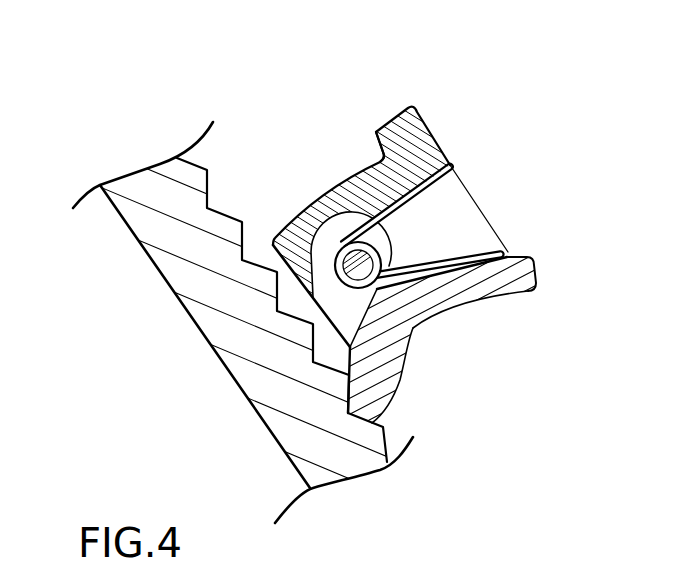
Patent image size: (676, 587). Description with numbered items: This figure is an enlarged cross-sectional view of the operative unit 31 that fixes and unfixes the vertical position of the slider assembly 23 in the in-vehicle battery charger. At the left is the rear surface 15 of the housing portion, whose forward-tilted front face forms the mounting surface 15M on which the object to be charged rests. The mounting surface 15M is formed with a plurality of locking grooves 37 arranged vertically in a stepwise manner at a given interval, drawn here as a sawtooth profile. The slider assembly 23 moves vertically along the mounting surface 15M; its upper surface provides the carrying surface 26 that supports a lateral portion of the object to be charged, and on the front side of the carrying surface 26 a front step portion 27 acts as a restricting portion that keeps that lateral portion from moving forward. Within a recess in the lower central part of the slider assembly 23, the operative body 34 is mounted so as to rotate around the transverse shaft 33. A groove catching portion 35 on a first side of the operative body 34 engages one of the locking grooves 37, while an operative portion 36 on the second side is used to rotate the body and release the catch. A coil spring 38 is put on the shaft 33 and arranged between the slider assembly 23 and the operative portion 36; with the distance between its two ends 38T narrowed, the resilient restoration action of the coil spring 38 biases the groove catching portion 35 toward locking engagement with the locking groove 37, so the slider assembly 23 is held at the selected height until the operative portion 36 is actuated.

The rear surface 15 is at (148, 232).
The mounting surface 15M is at (207, 172).
The slider assembly 23 is at (425, 138).
The carrying surface 26 is at (340, 185).
The front step portion 27 is at (378, 140).
The operative unit 31 is at (550, 290).
The transverse shaft 33 is at (366, 261).
The operative body 34 is at (418, 318).
The groove catching portion 35 is at (378, 397).
The operative portion 36 is at (528, 290).
The locking grooves 37 is at (262, 266).
The coil spring 38 is at (347, 290).
The ends of the coil spring 38T is at (453, 170).